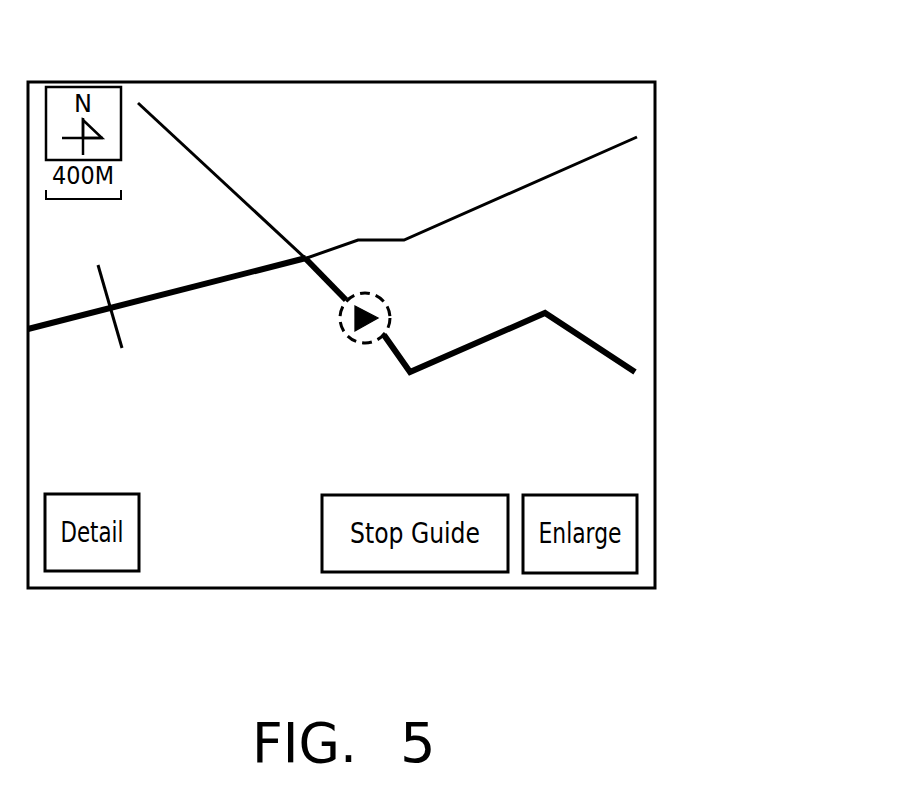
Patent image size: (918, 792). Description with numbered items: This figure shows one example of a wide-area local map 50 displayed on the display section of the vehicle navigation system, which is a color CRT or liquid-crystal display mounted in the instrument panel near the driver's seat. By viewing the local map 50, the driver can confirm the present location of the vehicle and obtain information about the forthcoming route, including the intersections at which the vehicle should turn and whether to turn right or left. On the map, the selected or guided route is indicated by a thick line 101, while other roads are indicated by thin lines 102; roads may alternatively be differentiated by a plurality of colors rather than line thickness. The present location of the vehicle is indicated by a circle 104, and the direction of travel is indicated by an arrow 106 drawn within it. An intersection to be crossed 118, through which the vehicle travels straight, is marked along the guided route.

The local map 50 is at (680, 280).
The thick line 101 is at (504, 322).
The thin lines 102 is at (358, 240).
The circle 104 is at (338, 322).
The arrow 106 is at (363, 306).
The intersection to be crossed 118 is at (108, 308).